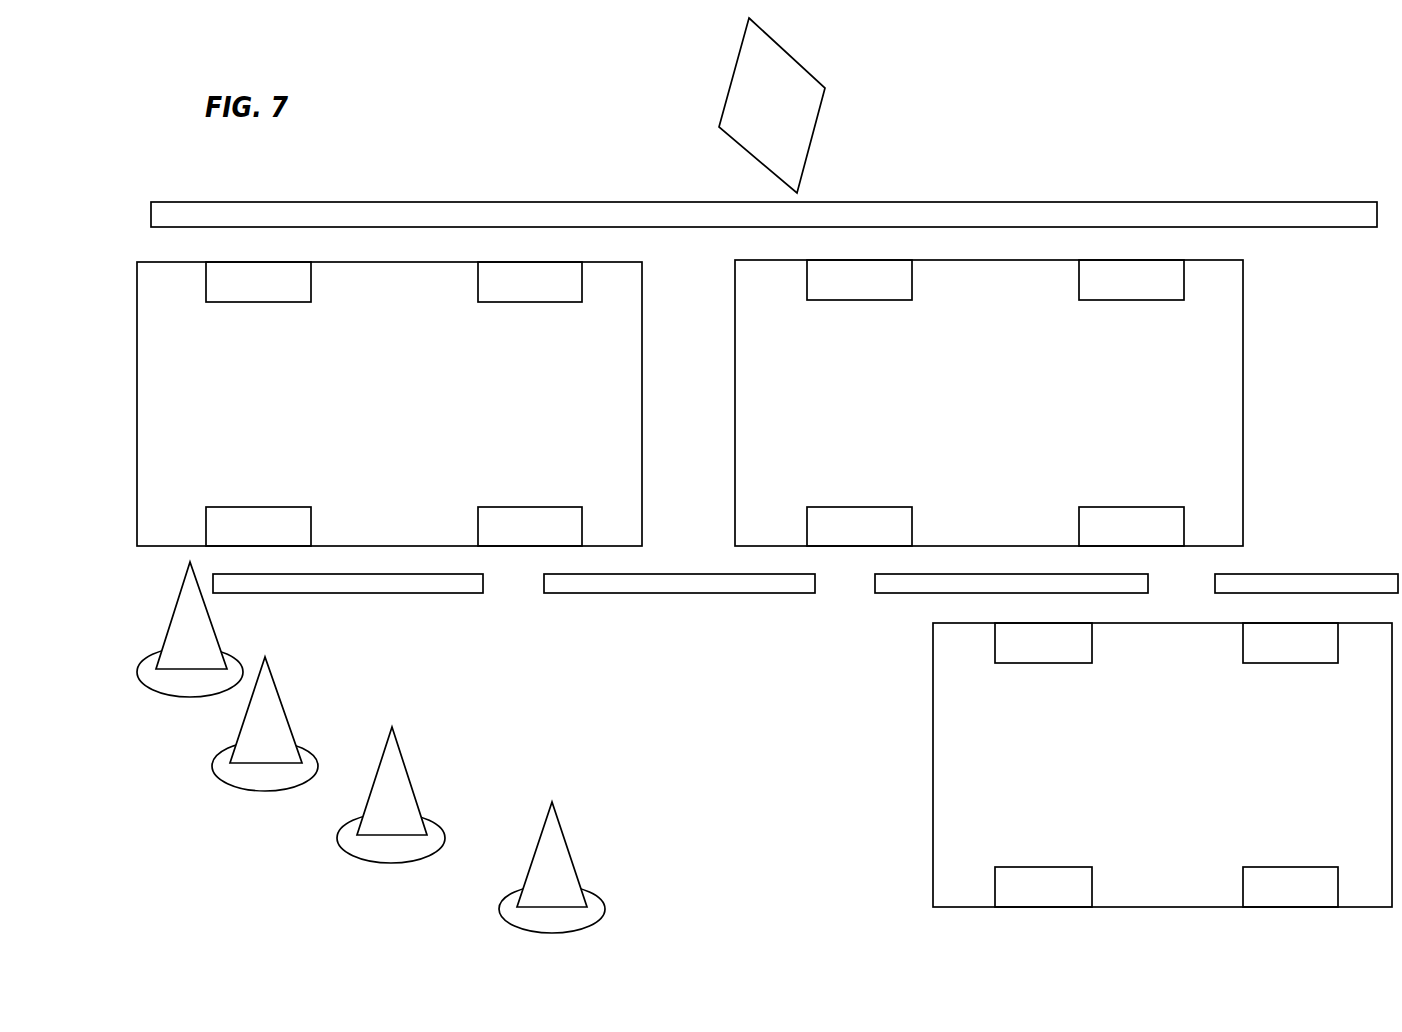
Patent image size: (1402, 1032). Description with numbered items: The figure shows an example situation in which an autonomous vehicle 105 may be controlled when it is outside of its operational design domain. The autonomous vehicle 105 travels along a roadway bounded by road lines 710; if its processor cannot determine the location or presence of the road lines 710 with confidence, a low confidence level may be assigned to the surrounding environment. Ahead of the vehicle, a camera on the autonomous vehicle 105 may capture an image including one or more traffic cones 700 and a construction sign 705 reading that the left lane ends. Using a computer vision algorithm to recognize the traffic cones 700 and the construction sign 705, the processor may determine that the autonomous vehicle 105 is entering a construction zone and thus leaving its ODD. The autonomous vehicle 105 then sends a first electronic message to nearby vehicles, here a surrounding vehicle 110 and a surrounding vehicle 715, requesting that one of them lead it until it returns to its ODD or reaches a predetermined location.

The autonomous vehicle 105 is at (1243, 403).
The surrounding vehicle 110 is at (642, 403).
The traffic cones 700 is at (190, 636).
The construction sign 705 is at (837, 125).
The road lines 710 is at (1087, 204).
The surrounding vehicle 715 is at (933, 765).